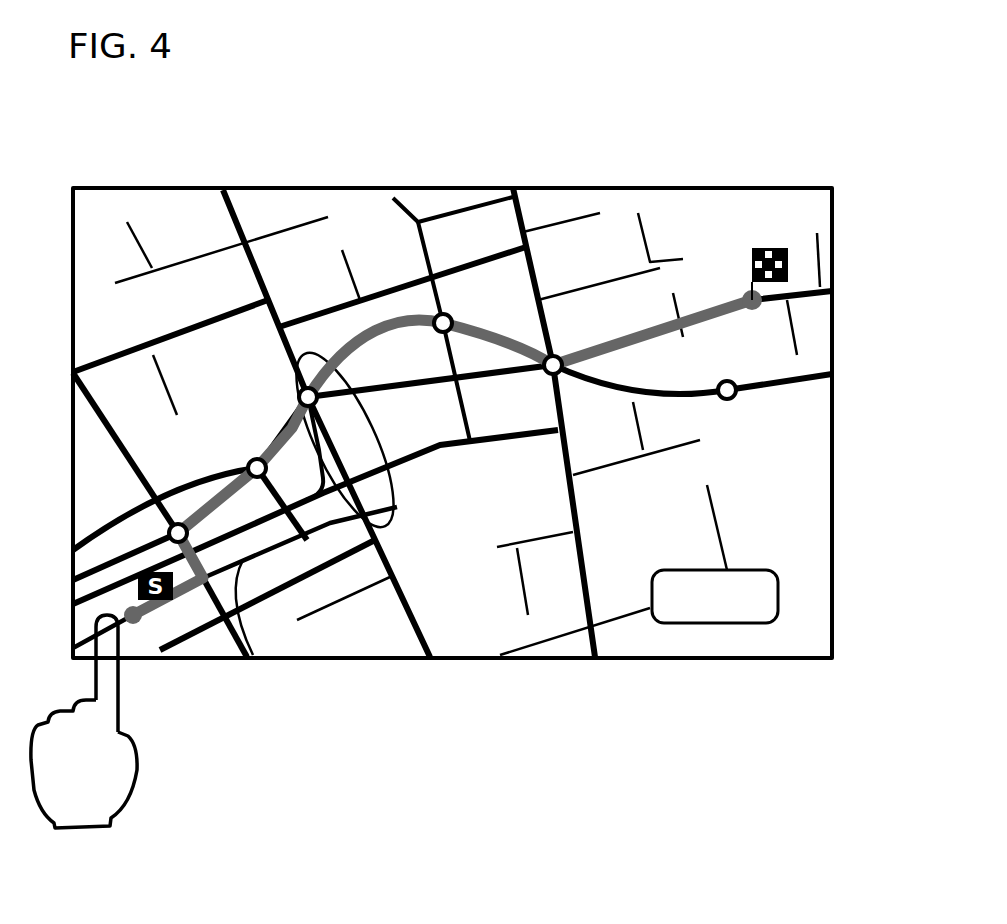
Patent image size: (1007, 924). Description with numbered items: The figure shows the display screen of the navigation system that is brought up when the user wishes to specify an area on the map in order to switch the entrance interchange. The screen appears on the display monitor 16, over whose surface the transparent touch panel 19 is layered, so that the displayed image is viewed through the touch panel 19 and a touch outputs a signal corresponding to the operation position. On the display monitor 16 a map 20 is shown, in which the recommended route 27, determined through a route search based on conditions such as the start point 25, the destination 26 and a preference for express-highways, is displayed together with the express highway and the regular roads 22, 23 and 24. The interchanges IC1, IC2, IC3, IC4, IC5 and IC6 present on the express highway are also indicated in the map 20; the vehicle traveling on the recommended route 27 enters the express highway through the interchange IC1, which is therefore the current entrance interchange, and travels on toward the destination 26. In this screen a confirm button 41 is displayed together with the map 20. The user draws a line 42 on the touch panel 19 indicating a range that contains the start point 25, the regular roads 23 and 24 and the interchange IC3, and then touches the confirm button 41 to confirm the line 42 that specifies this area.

The display monitor 16 is at (452, 381).
The touch panel 19 is at (714, 183).
The map 20 is at (809, 276).
The regular road 22 is at (200, 563).
The regular road 23 is at (253, 655).
The regular road 24 is at (357, 483).
The start point 25 is at (140, 625).
The destination 26 is at (746, 295).
The recommended route 27 is at (392, 337).
The confirm button 41 is at (779, 598).
The line specifying an area 42 is at (403, 524).
The interchange IC1 is at (177, 520).
The interchange IC2 is at (248, 455).
The interchange IC3 is at (316, 368).
The interchange IC4 is at (449, 314).
The interchange IC5 is at (561, 350).
The interchange IC6 is at (737, 398).